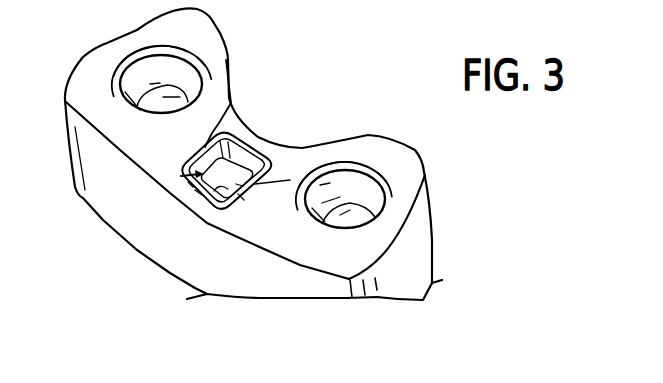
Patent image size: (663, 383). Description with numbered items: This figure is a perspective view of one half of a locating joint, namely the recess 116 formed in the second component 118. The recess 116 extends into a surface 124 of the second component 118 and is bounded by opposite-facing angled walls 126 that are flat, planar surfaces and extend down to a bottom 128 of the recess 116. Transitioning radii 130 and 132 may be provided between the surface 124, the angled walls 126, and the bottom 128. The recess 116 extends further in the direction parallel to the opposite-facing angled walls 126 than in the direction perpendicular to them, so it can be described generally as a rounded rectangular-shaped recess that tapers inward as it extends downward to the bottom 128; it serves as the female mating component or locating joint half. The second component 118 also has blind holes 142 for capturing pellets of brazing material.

The second component 118 is at (325, 113).
The surface 124 is at (108, 104).
The recess 116 is at (174, 189).
The opposite-facing angled walls 126 is at (205, 149).
The bottom 128 is at (207, 212).
The transitioning radius 130 is at (268, 187).
The transitioning radius 132 is at (232, 103).
The blind holes 142 is at (137, 73).